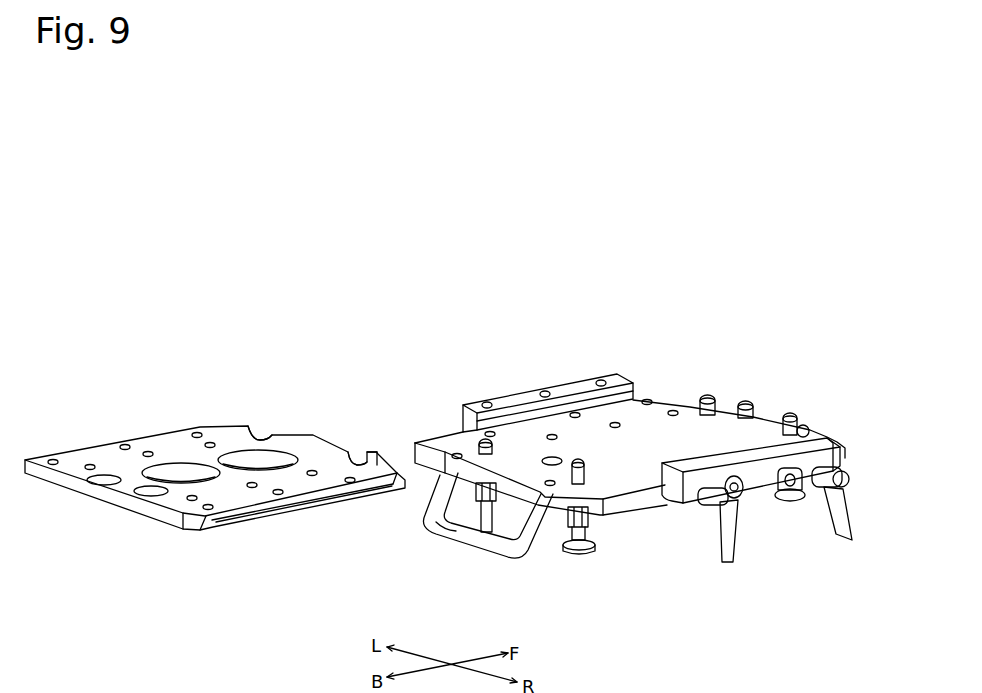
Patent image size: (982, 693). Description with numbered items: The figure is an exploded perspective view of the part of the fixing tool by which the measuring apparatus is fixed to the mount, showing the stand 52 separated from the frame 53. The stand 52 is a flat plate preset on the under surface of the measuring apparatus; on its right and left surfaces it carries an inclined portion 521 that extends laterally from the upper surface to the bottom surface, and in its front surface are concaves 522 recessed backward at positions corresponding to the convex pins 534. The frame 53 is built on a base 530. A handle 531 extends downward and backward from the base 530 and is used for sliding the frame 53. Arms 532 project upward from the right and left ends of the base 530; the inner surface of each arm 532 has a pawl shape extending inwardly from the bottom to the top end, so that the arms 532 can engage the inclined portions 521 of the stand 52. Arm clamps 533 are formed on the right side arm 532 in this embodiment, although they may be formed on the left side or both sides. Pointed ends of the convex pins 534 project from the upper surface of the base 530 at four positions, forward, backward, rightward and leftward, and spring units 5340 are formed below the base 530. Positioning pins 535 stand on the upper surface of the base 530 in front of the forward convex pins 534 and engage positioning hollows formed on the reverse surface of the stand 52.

The stand 52 is at (148, 431).
The inclined portion 521 is at (262, 505).
The concave 522 is at (262, 436).
The frame 53 is at (627, 392).
The base 530 is at (628, 465).
The handle 531 is at (470, 542).
The arm 532 is at (510, 393).
The arm clamp 533 is at (720, 535).
The convex pin 534 is at (478, 441).
The positioning pin 535 is at (746, 400).
The spring unit 5340 is at (480, 510).